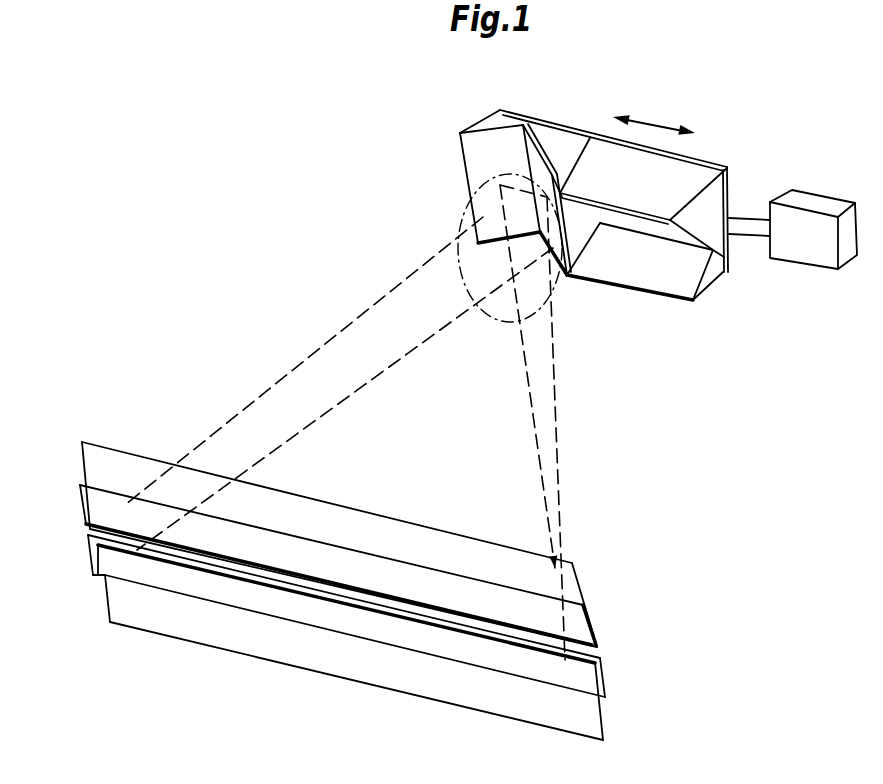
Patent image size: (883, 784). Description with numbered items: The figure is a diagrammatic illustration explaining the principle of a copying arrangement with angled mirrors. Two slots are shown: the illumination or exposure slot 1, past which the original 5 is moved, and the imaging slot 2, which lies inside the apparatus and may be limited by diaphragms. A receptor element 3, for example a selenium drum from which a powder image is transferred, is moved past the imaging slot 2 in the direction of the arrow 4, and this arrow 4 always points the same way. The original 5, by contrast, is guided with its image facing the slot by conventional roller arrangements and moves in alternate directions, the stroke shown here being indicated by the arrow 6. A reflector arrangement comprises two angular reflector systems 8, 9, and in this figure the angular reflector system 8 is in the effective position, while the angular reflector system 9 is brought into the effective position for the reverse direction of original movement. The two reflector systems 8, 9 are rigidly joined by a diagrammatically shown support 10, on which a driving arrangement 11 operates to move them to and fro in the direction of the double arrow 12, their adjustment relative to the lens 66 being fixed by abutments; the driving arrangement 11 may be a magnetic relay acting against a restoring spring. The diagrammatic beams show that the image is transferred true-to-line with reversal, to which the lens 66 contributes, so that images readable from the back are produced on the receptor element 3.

The illumination slot 1 is at (592, 632).
The imaging slot 2 is at (603, 683).
The receptor element 3 is at (599, 730).
The arrow 4 is at (343, 610).
The original 5 is at (573, 580).
The arrow 6 is at (335, 575).
The angular reflector system 8 is at (482, 122).
The angular reflector system 9 is at (716, 283).
The support 10 is at (601, 136).
The driving arrangement 11 is at (823, 218).
The double arrow 12 is at (657, 125).
The lens 66 is at (483, 217).